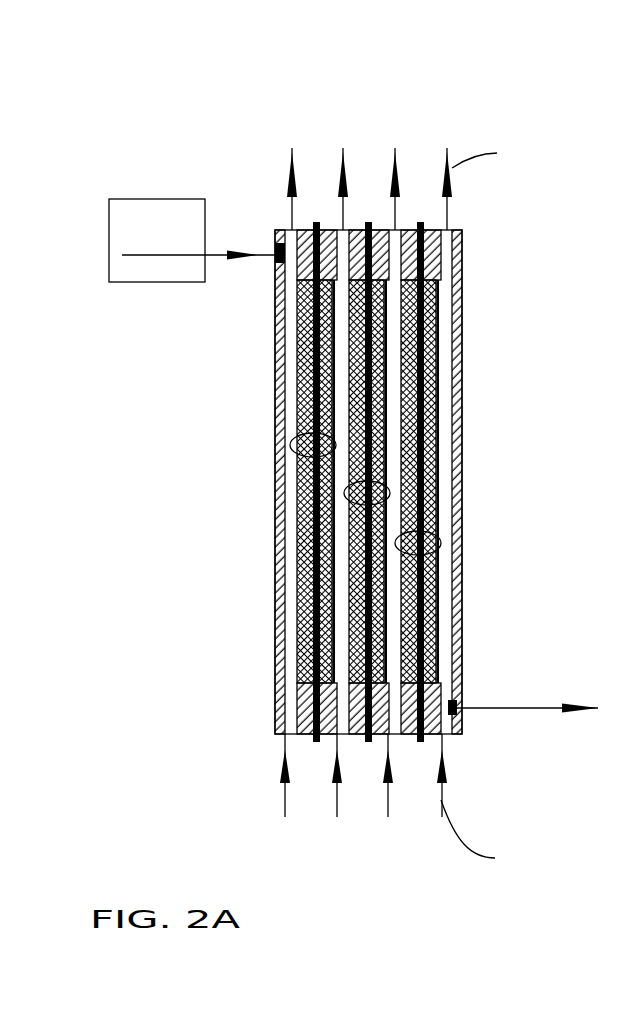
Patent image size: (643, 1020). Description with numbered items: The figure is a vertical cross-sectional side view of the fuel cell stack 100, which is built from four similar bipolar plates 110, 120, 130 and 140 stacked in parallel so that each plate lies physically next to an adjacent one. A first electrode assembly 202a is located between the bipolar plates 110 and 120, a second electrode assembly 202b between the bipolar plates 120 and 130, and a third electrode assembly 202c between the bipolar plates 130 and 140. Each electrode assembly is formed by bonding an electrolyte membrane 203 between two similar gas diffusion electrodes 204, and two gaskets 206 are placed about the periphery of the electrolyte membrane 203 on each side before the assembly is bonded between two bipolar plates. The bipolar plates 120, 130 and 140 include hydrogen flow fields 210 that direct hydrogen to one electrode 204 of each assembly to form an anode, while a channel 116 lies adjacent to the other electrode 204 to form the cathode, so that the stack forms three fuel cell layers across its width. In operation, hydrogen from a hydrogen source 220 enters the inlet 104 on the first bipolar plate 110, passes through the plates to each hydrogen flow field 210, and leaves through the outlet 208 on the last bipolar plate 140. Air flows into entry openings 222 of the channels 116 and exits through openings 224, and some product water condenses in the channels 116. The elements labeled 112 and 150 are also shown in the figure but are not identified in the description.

The fuel cell stack 100 is at (235, 179).
The inlet 104 is at (275, 262).
The bipolar plate 110 is at (268, 742).
The current collector 112 is at (440, 352).
The channel 116 is at (390, 640).
The bipolar plate 120 is at (366, 538).
The bipolar plate 130 is at (451, 549).
The bipolar plate 140 is at (481, 538).
The second end plate 150 is at (462, 652).
The first electrode assembly 202a is at (290, 445).
The second electrode assembly 202b is at (344, 493).
The third electrode assembly 202c is at (395, 543).
The electrolyte membrane 203 is at (306, 397).
The gas diffusion electrode 204 is at (351, 437).
The gasket 206 is at (425, 271).
The outlet 208 is at (458, 717).
The hydrogen flow field 210 is at (325, 608).
The hydrogen source 220 is at (124, 199).
The entry opening 222 is at (281, 738).
The exit opening 224 is at (287, 230).